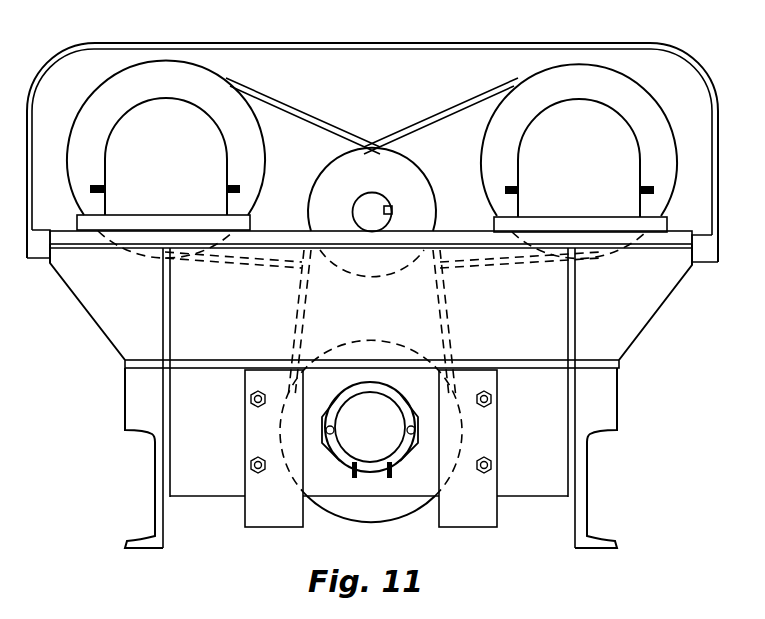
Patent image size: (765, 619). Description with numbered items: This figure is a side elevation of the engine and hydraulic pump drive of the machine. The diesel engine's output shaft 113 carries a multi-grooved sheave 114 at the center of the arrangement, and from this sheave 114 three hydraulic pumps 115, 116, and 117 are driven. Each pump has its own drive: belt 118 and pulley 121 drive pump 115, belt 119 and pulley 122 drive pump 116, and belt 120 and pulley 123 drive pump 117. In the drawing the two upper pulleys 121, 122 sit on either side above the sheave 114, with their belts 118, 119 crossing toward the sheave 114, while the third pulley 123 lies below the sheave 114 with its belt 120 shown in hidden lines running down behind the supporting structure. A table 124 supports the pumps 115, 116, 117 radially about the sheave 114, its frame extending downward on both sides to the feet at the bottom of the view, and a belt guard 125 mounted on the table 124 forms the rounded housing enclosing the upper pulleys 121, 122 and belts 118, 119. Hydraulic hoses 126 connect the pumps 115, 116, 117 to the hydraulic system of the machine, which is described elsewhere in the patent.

The output shaft 113 is at (352, 208).
The multi-grooved sheave 114 is at (424, 206).
The hydraulic pump 115 is at (213, 154).
The hydraulic pump 116 is at (532, 160).
The hydraulic pump 117 is at (393, 413).
The belt 118 is at (300, 112).
The belt 119 is at (486, 102).
The belt 120 is at (302, 319).
The pulley 121 is at (249, 128).
The pulley 122 is at (490, 129).
The pulley 123 is at (352, 512).
The table 124 is at (630, 338).
The belt guard 125 is at (535, 25).
The hydraulic hoses 126 is at (92, 190).